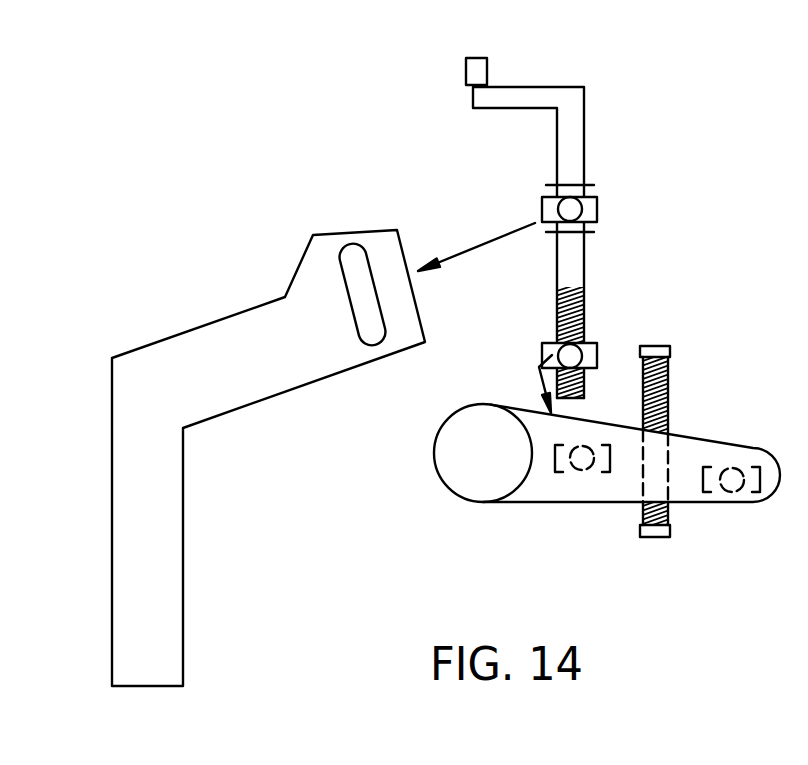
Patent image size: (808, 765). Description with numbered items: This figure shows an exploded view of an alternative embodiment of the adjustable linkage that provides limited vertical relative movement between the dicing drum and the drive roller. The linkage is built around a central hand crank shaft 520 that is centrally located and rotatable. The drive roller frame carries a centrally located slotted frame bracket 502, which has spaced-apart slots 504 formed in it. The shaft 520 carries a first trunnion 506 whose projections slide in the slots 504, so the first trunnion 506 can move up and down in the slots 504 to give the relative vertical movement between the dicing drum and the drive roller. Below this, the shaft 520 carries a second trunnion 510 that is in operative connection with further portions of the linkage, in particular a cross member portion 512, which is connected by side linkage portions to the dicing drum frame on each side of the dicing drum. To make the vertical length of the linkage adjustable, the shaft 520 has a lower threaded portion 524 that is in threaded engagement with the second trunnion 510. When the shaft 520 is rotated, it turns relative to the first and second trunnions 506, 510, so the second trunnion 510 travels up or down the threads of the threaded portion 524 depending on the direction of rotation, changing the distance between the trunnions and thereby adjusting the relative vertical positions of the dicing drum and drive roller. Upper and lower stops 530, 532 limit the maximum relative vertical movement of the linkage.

The slotted frame bracket 502 is at (353, 246).
The slots 504 is at (360, 285).
The first trunnion 506 is at (598, 208).
The second trunnion 510 is at (600, 352).
The cross member portion 512 is at (478, 75).
The central hand crank shaft 520 is at (573, 102).
The lower threaded portion 524 is at (570, 311).
The upper stop 530 is at (660, 348).
The lower stop 532 is at (670, 528).